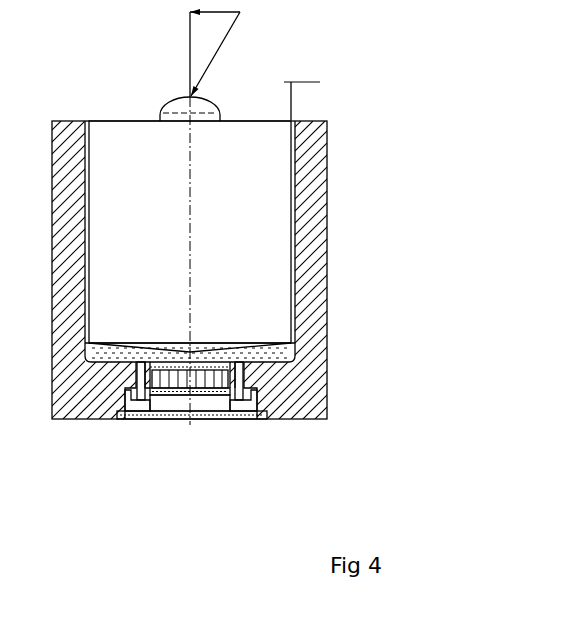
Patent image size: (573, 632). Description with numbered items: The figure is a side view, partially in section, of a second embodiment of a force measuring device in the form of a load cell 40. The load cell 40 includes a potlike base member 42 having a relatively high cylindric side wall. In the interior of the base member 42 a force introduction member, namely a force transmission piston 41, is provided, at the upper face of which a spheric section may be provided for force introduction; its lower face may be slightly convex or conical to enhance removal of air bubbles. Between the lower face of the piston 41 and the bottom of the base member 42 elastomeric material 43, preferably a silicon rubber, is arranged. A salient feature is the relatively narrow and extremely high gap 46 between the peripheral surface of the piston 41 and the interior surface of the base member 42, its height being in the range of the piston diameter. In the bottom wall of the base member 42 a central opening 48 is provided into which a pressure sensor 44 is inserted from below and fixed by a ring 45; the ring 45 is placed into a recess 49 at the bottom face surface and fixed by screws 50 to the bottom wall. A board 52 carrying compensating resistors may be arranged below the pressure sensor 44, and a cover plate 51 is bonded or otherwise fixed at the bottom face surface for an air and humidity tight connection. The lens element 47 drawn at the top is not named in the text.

The load cell 40 is at (107, 100).
The force transmission piston 41 is at (263, 191).
The base member 42 is at (310, 218).
The elastomeric material 43 is at (292, 253).
The pressure sensor 44 is at (178, 380).
The ring 45 is at (108, 419).
The gap 46 is at (293, 80).
The lens 47 is at (205, 100).
The central opening 48 is at (270, 362).
The recess 49 is at (258, 408).
The screws 50 is at (140, 402).
The cover plate 51 is at (226, 404).
The board 52 is at (196, 396).